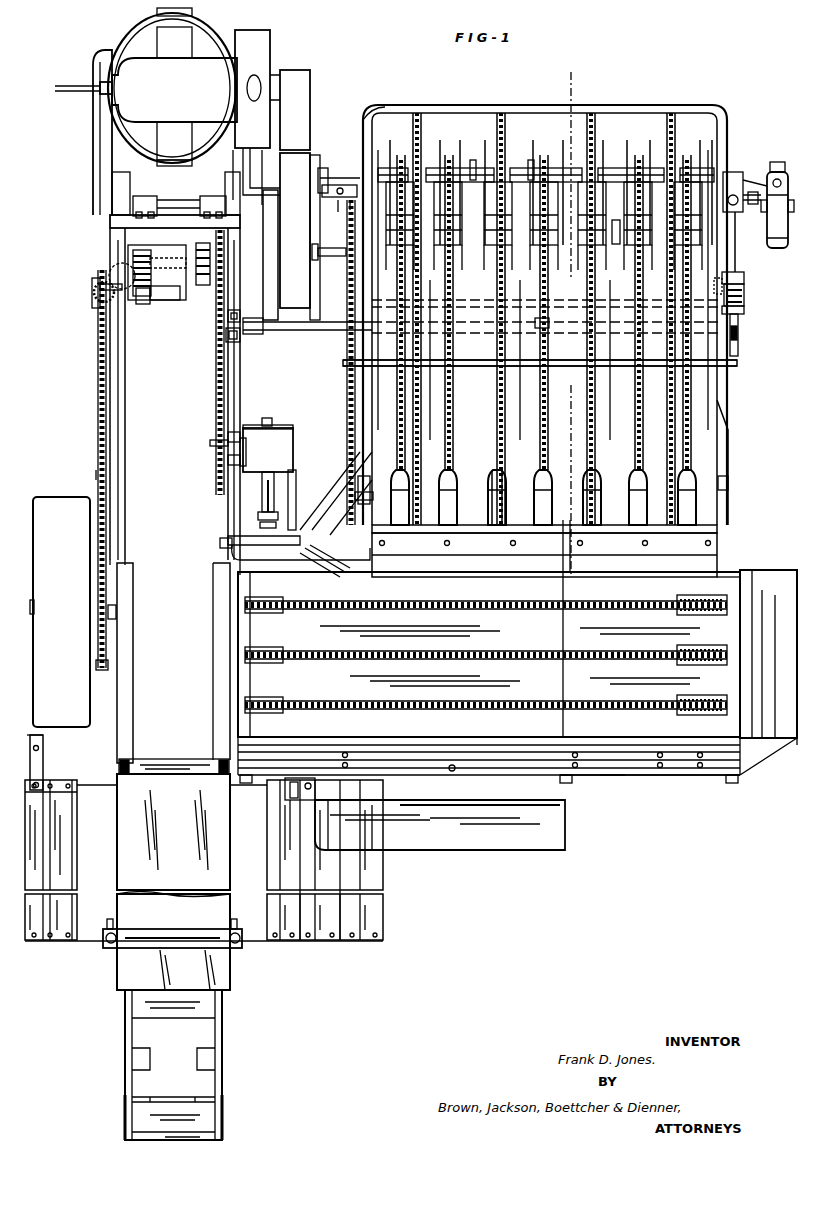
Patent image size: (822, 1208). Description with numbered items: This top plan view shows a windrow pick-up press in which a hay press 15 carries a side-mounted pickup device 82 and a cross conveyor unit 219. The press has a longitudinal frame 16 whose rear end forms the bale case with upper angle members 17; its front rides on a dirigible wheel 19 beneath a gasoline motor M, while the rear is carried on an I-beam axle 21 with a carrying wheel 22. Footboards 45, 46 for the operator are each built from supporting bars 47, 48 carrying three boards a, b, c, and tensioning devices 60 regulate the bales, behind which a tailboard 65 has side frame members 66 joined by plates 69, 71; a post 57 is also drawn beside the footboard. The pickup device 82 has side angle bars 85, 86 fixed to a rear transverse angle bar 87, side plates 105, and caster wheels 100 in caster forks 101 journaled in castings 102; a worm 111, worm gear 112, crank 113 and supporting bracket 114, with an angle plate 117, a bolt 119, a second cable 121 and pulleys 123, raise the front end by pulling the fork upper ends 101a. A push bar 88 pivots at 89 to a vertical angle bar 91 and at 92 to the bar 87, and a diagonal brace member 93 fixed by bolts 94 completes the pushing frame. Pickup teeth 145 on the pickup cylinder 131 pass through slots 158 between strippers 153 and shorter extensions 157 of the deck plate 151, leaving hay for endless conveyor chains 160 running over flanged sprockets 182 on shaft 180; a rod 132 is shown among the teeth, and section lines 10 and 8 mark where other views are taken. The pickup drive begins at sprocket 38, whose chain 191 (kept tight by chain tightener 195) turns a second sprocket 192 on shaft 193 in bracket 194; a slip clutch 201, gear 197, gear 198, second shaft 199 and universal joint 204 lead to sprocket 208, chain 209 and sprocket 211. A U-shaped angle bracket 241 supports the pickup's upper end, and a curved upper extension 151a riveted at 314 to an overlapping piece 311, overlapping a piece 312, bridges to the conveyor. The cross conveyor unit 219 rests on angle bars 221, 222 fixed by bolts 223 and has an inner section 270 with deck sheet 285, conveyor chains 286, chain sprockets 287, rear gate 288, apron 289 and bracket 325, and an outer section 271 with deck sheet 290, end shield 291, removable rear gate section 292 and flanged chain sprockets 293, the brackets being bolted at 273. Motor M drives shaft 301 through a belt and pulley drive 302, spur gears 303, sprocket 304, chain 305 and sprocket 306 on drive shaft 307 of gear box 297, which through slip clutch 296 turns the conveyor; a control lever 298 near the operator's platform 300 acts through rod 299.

The gasoline motor M is at (160, 86).
The dirigible wheel 19 is at (184, 54).
The hay press 15 is at (85, 139).
The sprocket 304 is at (218, 234).
The frame 16 is at (168, 380).
The upper angle members 17 is at (122, 502).
The gear 198 is at (144, 244).
The second shaft 199 is at (175, 246).
The slip clutch 201 is at (115, 256).
The second sprocket 192 is at (102, 276).
The shaft 193 is at (90, 294).
The gear 197 is at (145, 302).
The bracket 194 is at (162, 294).
The set of spur gears 303 is at (200, 284).
The pivot 89 is at (246, 322).
The vertically extending angle bar 91 is at (244, 338).
The belt and pulley drive 302 is at (296, 124).
The carrying caster wheels 100 is at (312, 215).
The universal joint 204 is at (295, 230).
The shaft 301 is at (260, 283).
The second cable 121 is at (332, 168).
The casting 102 is at (335, 178).
The side angle bar 85 is at (362, 200).
The pulleys 123 is at (344, 200).
The sprocket 208 is at (352, 248).
The chain 209 is at (353, 270).
The transverse bar 88 is at (326, 328).
The chain tightener 195 is at (98, 444).
The chain 191 is at (96, 488).
The sprocket 38 is at (100, 672).
The I-beam axle 21 is at (117, 612).
The carrying wheel 22 is at (62, 584).
The chain 305 is at (217, 380).
The drive shaft 307 is at (216, 432).
The sprocket 306 is at (217, 478).
The gear box 297 is at (284, 462).
The slip clutch 296 is at (264, 516).
The bolted connection 273 is at (281, 496).
The rod 299 is at (296, 484).
The diagonal brace member 93 is at (322, 504).
The sprocket 211 is at (348, 516).
The shaft 180 is at (362, 503).
The angle bar 221 is at (236, 536).
The bolts 223 is at (220, 552).
The pickup cylinder 131 is at (614, 124).
The pickup device 82 is at (745, 350).
The section line 10 is at (571, 72).
The section line 8 is at (571, 385).
The side plates 105 is at (394, 369).
The deck plate 151 is at (488, 300).
The strippers 153 is at (466, 142).
The rod 132 is at (486, 158).
The pickup teeth 145 is at (522, 151).
The slots 158 is at (446, 249).
The shorter extensions 157 is at (622, 248).
The bolts 94 is at (450, 336).
The pivot 92 is at (539, 330).
The rear transverse angle bar 87 is at (616, 320).
The endless conveyor chains 160 is at (544, 454).
The flanged sprockets 182 is at (490, 488).
The U-shaped angle bracket 241 is at (726, 486).
The curved upper extension 151a is at (712, 515).
The rivets 314 is at (628, 545).
The overlapping piece 311 is at (694, 553).
The overlapping piece 312 is at (710, 572).
The side angle bar 86 is at (730, 174).
The upper end of caster fork 101a is at (794, 159).
The caster fork 101 is at (784, 209).
The bolt 119 is at (745, 213).
The angle plate 117 is at (732, 250).
The worm gear 112 is at (742, 280).
The worm 111 is at (742, 301).
The supporting bracket 114 is at (746, 314).
The crank 113 is at (740, 338).
The apron 289 is at (294, 575).
The chain sprockets 287 is at (276, 616).
The conveyor chains 286 is at (520, 658).
The deck sheet 285 is at (488, 706).
The flanged chain sprockets 293 is at (704, 610).
The deck sheet 290 is at (706, 724).
The end shield 291 is at (785, 592).
The rear gate 288 is at (412, 766).
The bracket 325 is at (452, 768).
The removable rear gate section 292 is at (624, 772).
The outer section 271 is at (696, 784).
The cross conveyor unit 219 is at (600, 786).
The inner section 270 is at (536, 804).
The operator's platform 300 is at (390, 846).
The control lever 298 is at (296, 796).
The post 57 is at (40, 740).
The board a is at (66, 783).
The supporting bar 48 is at (106, 786).
The angle bar 222 is at (194, 778).
The tensioning devices 60 is at (108, 926).
The supporting bar 47 is at (84, 940).
The footboard 46 is at (57, 964).
The board b is at (32, 942).
The board c is at (358, 948).
The footboard 45 is at (384, 948).
The tailboard 65 is at (236, 1071).
The plate 69 is at (134, 1002).
The side frame members 66 is at (126, 1038).
The plate 71 is at (140, 1110).